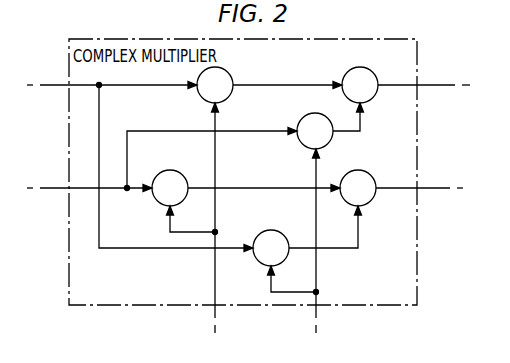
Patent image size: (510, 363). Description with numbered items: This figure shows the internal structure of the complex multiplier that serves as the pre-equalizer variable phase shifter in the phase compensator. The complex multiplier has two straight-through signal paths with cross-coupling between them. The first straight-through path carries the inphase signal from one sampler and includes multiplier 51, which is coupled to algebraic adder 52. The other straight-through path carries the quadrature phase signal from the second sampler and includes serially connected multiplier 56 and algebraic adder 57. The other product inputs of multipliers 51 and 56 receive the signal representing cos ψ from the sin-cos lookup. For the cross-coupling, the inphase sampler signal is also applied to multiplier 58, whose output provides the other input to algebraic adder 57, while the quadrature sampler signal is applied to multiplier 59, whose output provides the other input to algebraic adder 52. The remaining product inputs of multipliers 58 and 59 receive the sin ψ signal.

The multiplier 51 is at (229, 72).
The algebraic adder 52 is at (373, 72).
The multiplier 56 is at (160, 172).
The algebraic adder 57 is at (368, 174).
The multiplier 58 is at (275, 230).
The multiplier 59 is at (305, 118).